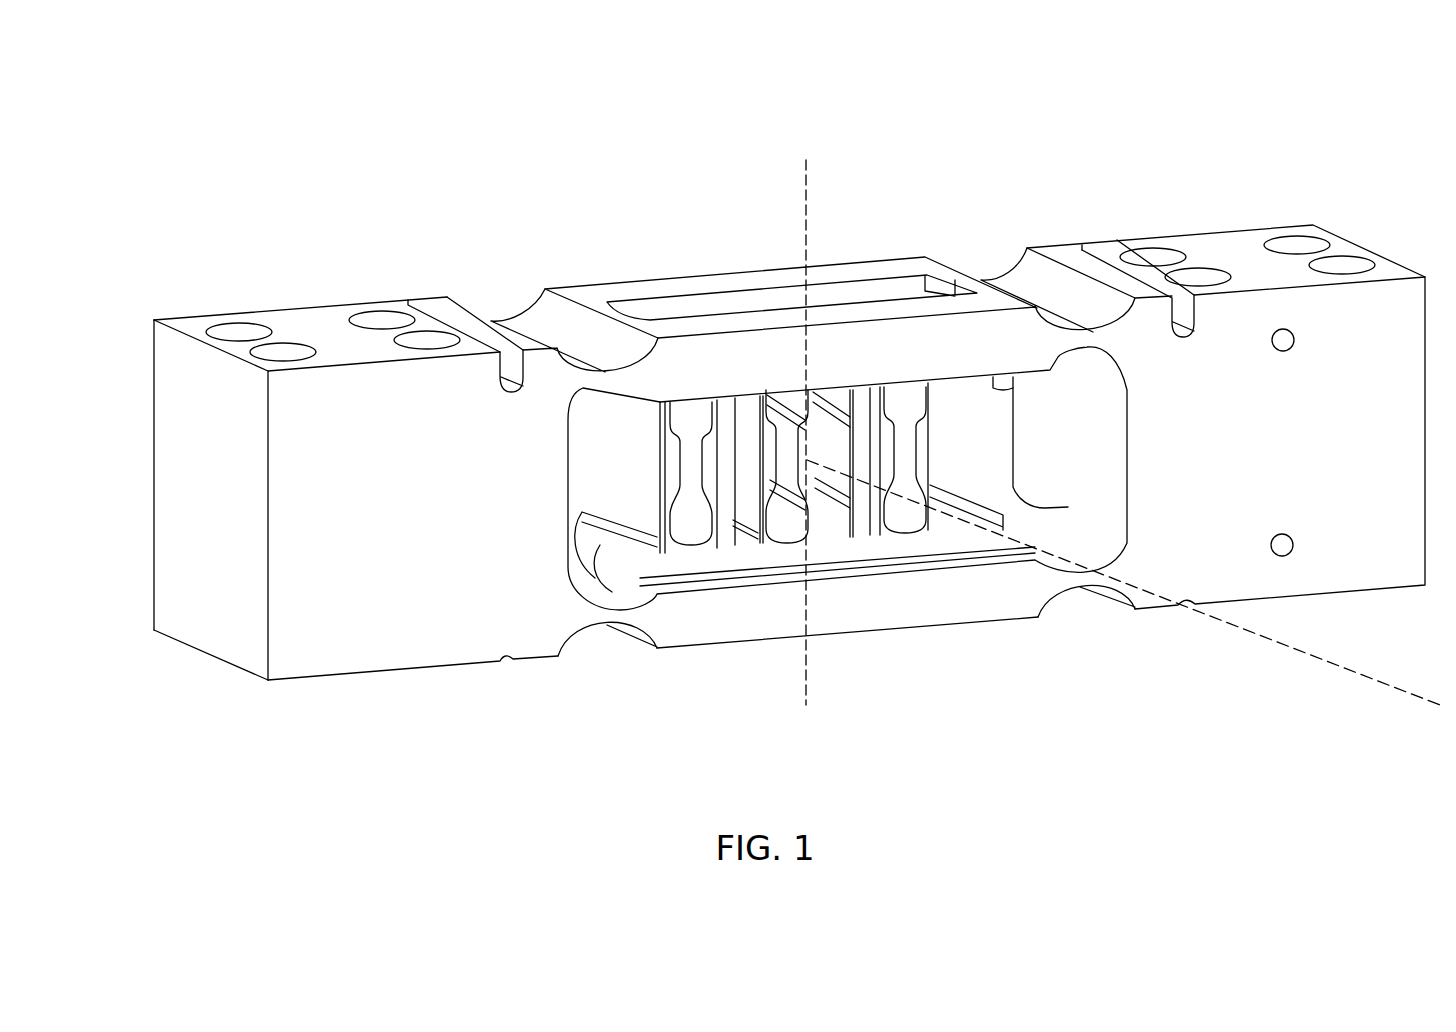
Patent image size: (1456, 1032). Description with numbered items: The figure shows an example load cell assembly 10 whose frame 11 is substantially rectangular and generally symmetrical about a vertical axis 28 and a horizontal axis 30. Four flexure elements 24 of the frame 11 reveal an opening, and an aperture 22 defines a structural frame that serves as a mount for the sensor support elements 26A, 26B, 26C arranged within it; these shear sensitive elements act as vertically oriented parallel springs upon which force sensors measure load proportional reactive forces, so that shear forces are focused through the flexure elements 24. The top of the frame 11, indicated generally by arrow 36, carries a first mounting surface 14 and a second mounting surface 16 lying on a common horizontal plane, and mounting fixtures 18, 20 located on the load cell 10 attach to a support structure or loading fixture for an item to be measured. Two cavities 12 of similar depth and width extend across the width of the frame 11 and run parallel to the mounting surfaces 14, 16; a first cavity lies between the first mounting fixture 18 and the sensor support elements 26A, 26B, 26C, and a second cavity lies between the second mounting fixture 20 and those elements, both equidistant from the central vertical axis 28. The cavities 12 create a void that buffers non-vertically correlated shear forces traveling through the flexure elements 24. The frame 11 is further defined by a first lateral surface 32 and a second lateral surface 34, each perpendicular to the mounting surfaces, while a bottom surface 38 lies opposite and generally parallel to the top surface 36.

The load cell assembly 10 is at (228, 123).
The frame 11 is at (656, 279).
The cavities 12 is at (505, 393).
The first mounting surface 14 is at (322, 326).
The second mounting surface 16 is at (1235, 252).
The first mounting fixture 18 is at (383, 322).
The second mounting fixture 20 is at (1153, 252).
The aperture 22 is at (1017, 455).
The flexure elements 24 is at (592, 373).
The sensor support element 26A is at (684, 557).
The sensor support element 26B is at (772, 543).
The sensor support element 26C is at (900, 542).
The vertical axis 28 is at (803, 190).
The horizontal axis 30 is at (1356, 672).
The first lateral surface 32 is at (1365, 530).
The second lateral surface 34 is at (150, 476).
The top surface 36 is at (183, 305).
The bottom surface 38 is at (212, 664).